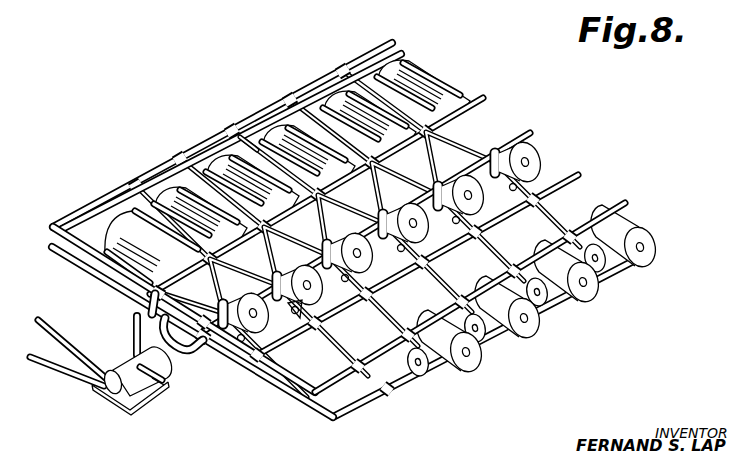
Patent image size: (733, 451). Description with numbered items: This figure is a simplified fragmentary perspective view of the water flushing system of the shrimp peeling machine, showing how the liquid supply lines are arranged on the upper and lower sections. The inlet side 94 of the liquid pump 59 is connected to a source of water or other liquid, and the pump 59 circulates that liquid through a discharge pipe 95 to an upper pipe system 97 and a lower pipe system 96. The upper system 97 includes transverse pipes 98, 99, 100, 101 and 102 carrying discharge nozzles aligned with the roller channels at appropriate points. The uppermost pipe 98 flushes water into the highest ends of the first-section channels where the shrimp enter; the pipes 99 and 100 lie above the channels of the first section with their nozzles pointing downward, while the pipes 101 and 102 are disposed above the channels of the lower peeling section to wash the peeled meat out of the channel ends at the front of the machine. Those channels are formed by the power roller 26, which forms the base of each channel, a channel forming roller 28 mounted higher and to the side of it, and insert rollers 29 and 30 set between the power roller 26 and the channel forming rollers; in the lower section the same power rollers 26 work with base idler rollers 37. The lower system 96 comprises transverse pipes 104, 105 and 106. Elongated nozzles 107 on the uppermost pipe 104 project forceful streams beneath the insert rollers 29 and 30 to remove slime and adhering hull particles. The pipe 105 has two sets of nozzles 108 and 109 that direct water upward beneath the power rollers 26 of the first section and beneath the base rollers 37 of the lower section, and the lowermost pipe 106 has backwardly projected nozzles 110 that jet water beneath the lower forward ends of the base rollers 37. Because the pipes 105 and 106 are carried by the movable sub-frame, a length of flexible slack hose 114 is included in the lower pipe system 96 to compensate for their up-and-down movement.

The power roller 26 is at (586, 290).
The channel forming roller 28 is at (540, 152).
The insert roller 29 is at (203, 252).
The insert roller 30 is at (222, 235).
The base idler roller 37 is at (513, 350).
The liquid pump 59 is at (115, 423).
The inlet side of the pump 94 is at (157, 393).
The discharge pipe 95 is at (132, 337).
The lower pipe system 96 is at (68, 260).
The upper pipe system 97 is at (288, 382).
The uppermost transverse pipe 98 is at (148, 180).
The transverse pipe 99 is at (458, 110).
The transverse pipe 100 is at (505, 147).
The transverse pipe 101 is at (569, 177).
The transverse pipe 102 is at (604, 211).
The uppermost transverse pipe of lower system 104 is at (100, 220).
The transverse pipe 105 is at (256, 350).
The lowermost transverse pipe 106 is at (373, 400).
The nozzle 107 is at (255, 146).
The nozzle set 108 is at (230, 300).
The nozzle set 109 is at (297, 316).
The nozzle 110 is at (400, 380).
The flexible slack hose 114 is at (184, 360).